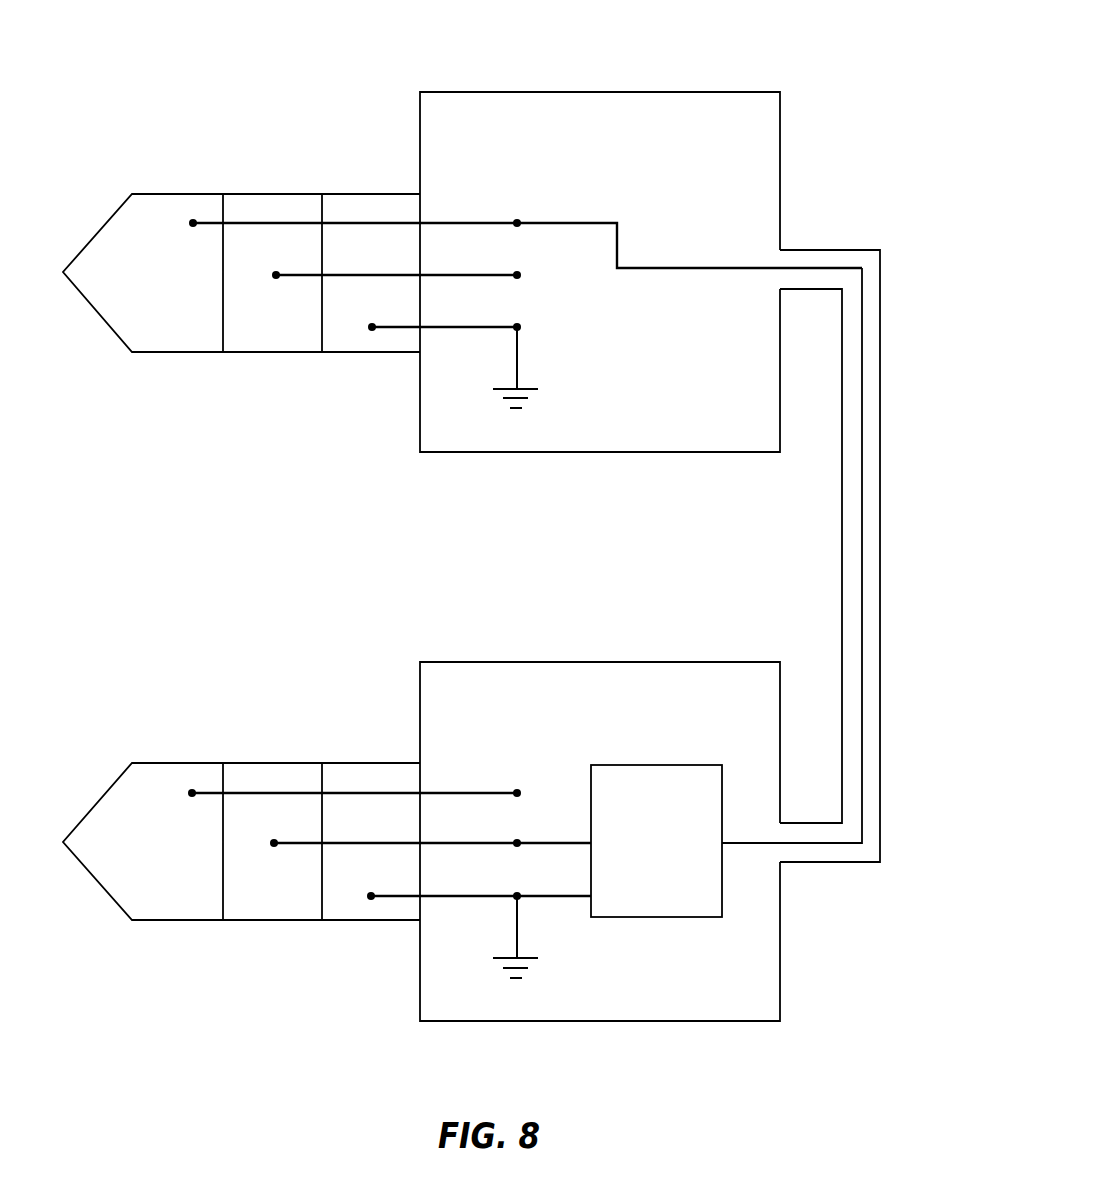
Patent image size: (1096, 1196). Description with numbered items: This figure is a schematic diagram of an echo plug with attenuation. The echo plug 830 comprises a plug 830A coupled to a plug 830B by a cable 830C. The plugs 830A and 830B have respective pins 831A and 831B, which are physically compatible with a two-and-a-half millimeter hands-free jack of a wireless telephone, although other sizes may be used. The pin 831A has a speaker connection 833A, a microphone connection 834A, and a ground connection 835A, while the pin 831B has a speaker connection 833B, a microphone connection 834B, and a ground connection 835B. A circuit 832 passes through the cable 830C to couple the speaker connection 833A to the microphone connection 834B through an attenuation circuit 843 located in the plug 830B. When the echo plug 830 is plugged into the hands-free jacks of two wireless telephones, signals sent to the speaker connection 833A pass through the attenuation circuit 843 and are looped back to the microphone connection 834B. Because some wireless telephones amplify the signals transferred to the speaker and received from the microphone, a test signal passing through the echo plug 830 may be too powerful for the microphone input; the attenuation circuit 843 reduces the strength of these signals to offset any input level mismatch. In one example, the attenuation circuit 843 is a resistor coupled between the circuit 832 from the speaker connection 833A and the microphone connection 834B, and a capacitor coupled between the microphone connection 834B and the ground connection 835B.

The echo plug 830 is at (882, 96).
The plug 830A is at (628, 159).
The plug 830B is at (628, 731).
The cable 830C is at (842, 532).
The pin 831A is at (234, 168).
The pin 831B is at (222, 739).
The circuit 832 is at (670, 270).
The speaker connection 833A is at (193, 225).
The speaker connection 833B is at (192, 795).
The microphone connection 834A is at (295, 243).
The microphone connection 834B is at (293, 808).
The ground connection 835A is at (372, 328).
The ground connection 835B is at (371, 897).
The attenuation circuit 843 is at (677, 909).